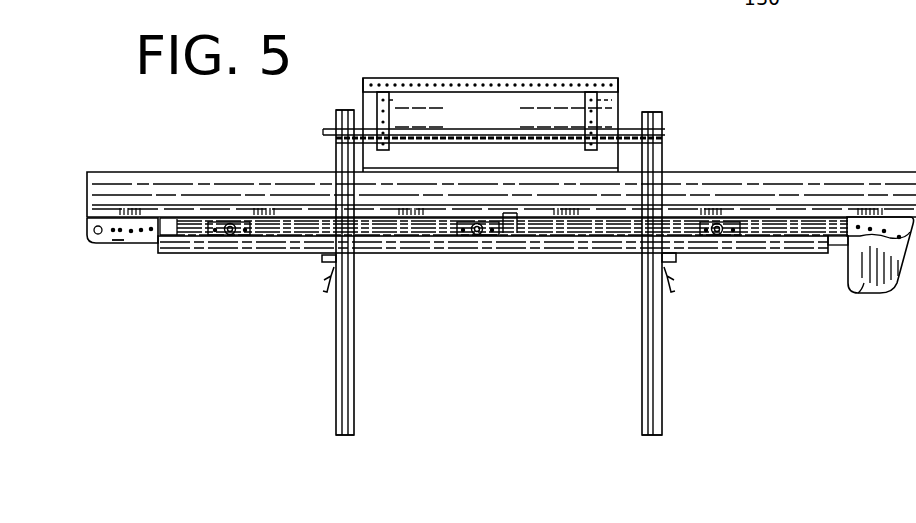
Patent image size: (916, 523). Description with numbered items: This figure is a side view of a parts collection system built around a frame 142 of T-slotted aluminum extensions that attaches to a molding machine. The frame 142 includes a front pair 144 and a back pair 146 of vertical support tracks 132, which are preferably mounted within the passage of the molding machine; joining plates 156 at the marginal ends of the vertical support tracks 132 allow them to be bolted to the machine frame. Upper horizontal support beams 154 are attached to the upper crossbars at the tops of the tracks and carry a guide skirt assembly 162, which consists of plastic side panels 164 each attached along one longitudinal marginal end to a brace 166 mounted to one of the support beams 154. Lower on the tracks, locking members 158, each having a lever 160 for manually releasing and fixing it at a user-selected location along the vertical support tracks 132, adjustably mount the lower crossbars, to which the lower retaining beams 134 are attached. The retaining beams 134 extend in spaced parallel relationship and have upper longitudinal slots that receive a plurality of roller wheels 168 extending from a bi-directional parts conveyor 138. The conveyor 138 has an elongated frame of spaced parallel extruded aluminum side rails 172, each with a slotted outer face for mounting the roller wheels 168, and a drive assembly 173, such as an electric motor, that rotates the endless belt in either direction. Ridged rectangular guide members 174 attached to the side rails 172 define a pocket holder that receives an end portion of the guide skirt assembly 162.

The vertical support tracks 132 is at (355, 393).
The lower retaining beams 134 is at (231, 256).
The bi-directional parts conveyor 138 is at (118, 262).
The frame 142 is at (782, 112).
The front pair of vertical support tracks 144 is at (388, 346).
The back pair of vertical support tracks 146 is at (736, 361).
The upper horizontal support beams 154 is at (630, 128).
The joining plates 156 is at (336, 122).
The locking members 158 is at (326, 259).
The lever 160 is at (326, 282).
The guide skirt assembly 162 is at (490, 105).
The side panels 164 is at (499, 122).
The brace 166 is at (548, 82).
The roller wheels 168 is at (719, 223).
The side rails 172 is at (194, 222).
The drive assembly 173 is at (866, 280).
The guide members 174 is at (677, 171).